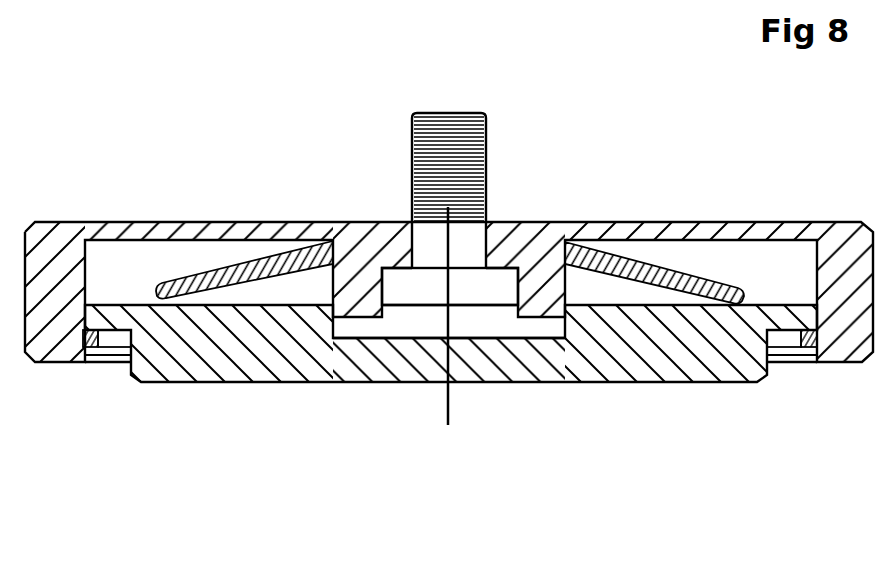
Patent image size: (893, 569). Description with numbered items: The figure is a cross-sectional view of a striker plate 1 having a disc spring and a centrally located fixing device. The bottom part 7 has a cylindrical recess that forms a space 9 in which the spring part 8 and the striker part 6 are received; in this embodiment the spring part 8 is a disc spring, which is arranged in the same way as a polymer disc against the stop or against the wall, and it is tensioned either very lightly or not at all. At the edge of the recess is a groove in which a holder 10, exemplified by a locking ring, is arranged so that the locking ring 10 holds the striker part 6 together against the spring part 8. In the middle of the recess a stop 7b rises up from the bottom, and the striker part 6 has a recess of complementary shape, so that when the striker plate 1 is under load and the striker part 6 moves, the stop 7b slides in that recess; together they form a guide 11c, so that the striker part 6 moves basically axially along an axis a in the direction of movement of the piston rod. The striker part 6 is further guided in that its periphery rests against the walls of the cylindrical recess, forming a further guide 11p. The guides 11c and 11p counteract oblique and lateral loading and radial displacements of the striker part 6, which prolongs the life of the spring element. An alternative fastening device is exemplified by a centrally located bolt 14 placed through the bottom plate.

The striker plate 1 is at (600, 142).
The striker part 6 is at (638, 363).
The bottom part 7 is at (838, 230).
The stop 7b is at (540, 318).
The spring part 8 is at (242, 262).
The space 9 is at (782, 262).
The holder 10 is at (812, 343).
The guide 11p is at (95, 314).
The guide 11c is at (334, 308).
The bolt 14 is at (487, 120).
The axis a is at (447, 398).